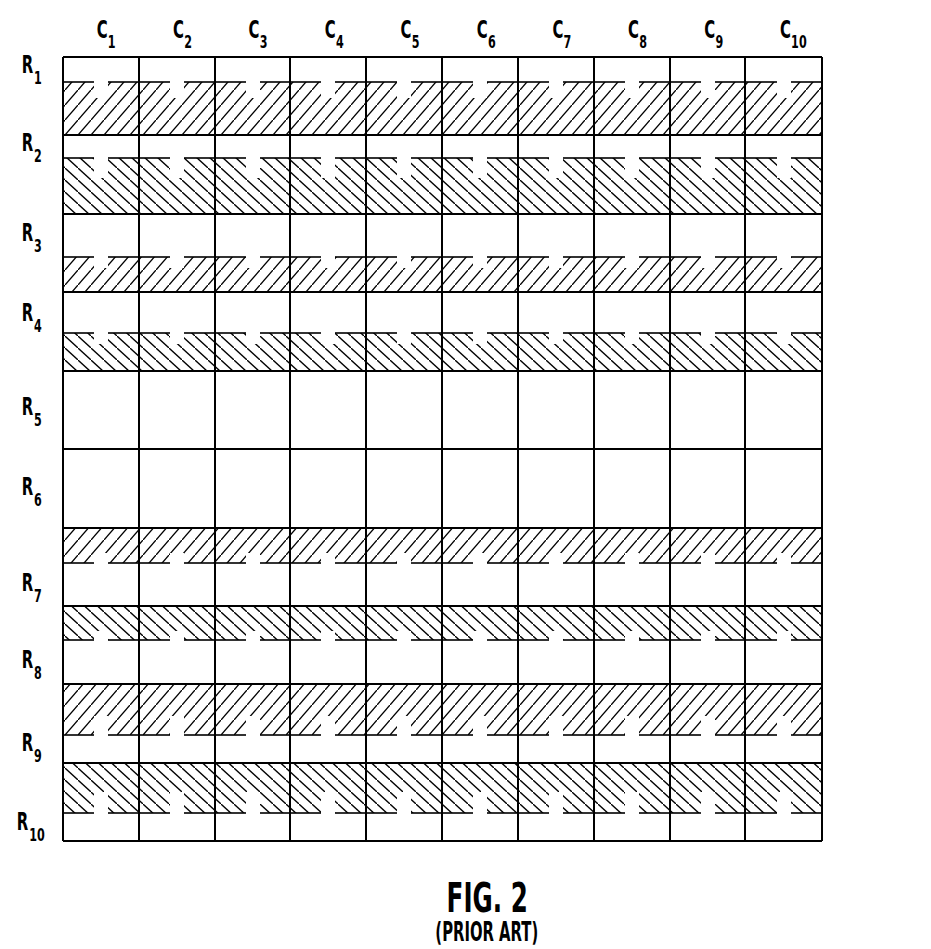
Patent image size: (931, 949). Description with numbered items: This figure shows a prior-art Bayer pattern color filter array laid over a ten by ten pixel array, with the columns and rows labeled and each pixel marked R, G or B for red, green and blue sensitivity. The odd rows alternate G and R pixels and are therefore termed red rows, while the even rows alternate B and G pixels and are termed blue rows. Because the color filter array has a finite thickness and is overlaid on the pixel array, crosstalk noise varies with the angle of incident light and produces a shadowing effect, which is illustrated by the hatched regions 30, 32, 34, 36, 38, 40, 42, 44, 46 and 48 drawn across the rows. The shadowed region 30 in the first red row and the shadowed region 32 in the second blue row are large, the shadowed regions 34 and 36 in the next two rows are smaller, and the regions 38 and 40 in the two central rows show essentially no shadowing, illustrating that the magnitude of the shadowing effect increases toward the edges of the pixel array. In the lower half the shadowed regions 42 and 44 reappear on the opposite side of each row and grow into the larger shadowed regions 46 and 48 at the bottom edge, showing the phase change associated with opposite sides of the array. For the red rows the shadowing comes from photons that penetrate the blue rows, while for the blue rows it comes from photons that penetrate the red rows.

The shadowed region of row R1 30 is at (822, 110).
The shadowed region of row R2 32 is at (822, 185).
The shadowed region of row R3 34 is at (822, 277).
The shadowed region of row R4 36 is at (822, 352).
The shadowed region of row R5 38 is at (808, 418).
The shadowed region of row R6 40 is at (808, 498).
The shadowed region of row R7 42 is at (805, 552).
The shadowed region of row R8 44 is at (808, 630).
The shadowed region of row R9 46 is at (808, 720).
The shadowed region of row R10 48 is at (808, 795).